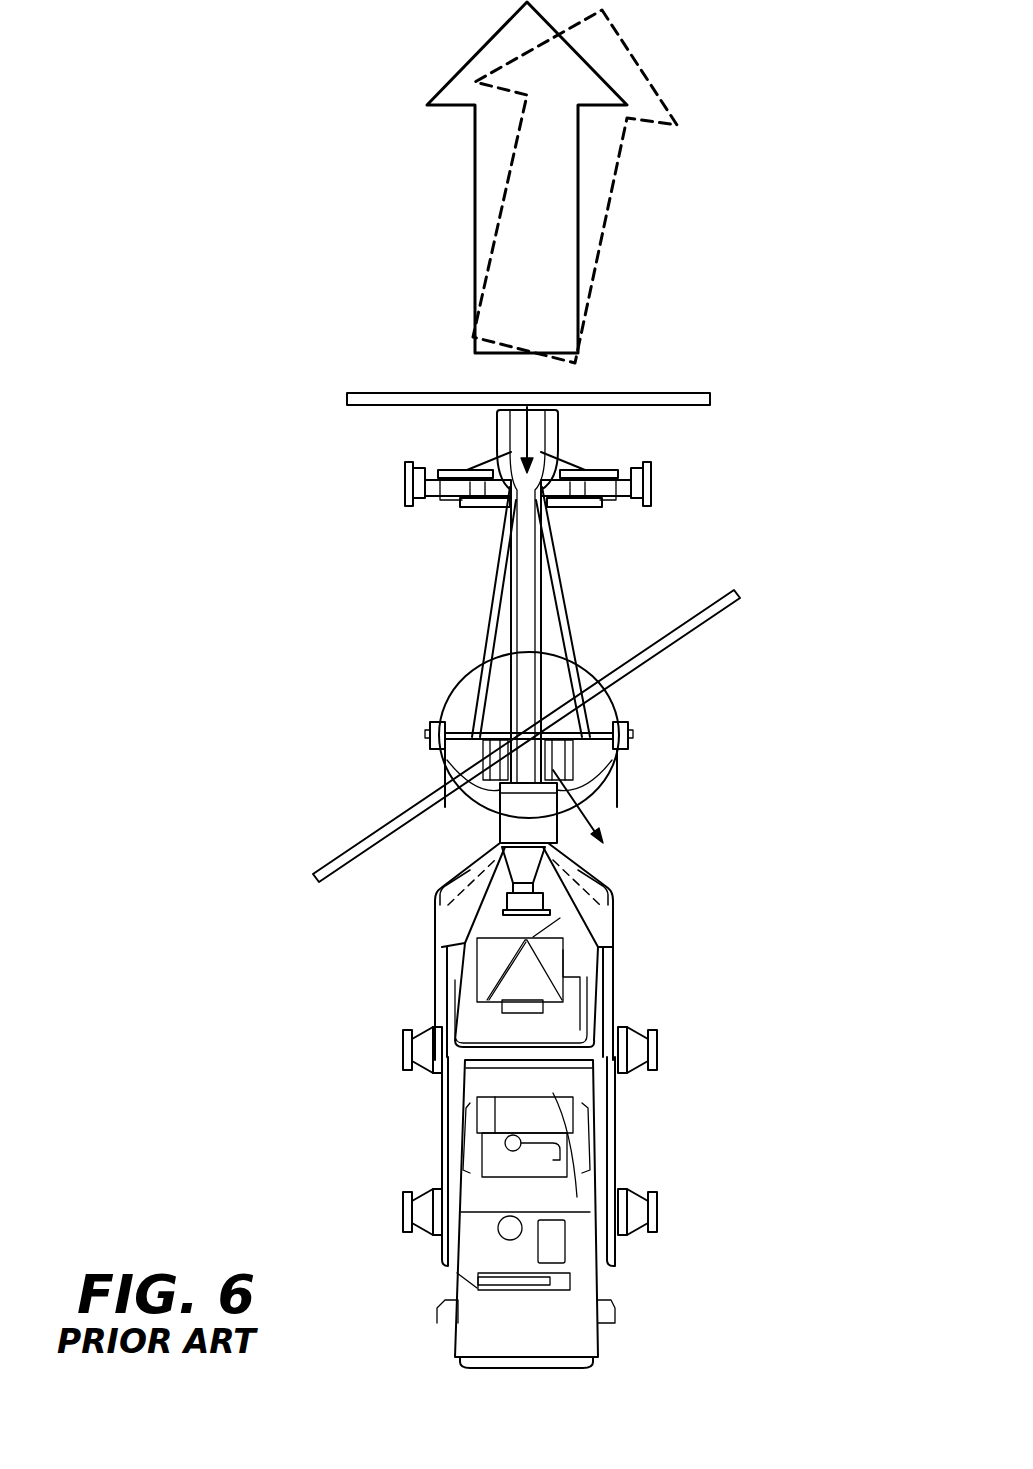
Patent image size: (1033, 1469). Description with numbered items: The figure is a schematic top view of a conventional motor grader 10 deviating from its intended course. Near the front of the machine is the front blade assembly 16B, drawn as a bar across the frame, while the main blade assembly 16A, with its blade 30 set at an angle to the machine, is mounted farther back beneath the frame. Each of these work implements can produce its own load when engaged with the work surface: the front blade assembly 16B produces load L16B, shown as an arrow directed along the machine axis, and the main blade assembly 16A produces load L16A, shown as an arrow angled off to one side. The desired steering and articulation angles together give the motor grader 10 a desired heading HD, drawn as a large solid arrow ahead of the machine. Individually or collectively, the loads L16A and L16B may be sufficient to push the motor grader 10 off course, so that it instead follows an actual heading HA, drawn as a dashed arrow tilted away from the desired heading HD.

The desired heading HD is at (475, 183).
The actual heading HA is at (607, 217).
The front blade assembly 16B is at (710, 399).
The load L16B is at (527, 428).
The main blade assembly 16A is at (563, 736).
The blade 30 is at (703, 623).
The load L16A is at (603, 836).
The motor grader 10 is at (738, 1113).